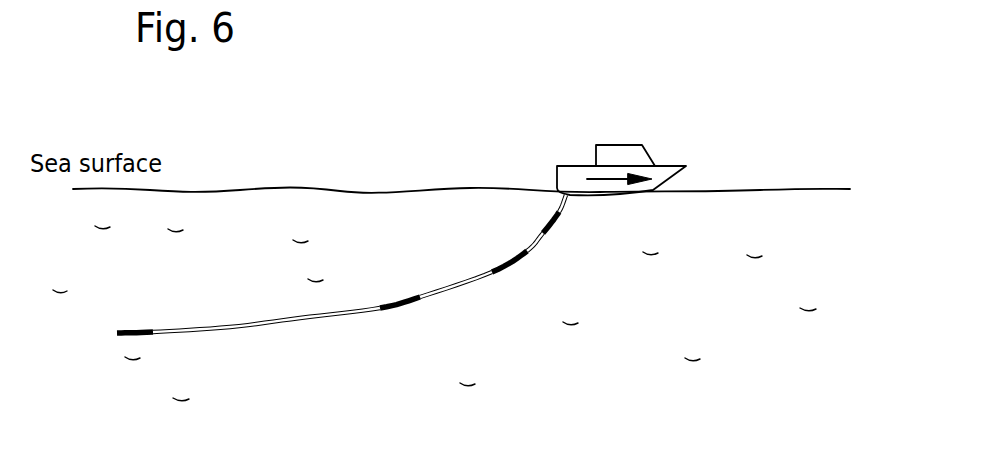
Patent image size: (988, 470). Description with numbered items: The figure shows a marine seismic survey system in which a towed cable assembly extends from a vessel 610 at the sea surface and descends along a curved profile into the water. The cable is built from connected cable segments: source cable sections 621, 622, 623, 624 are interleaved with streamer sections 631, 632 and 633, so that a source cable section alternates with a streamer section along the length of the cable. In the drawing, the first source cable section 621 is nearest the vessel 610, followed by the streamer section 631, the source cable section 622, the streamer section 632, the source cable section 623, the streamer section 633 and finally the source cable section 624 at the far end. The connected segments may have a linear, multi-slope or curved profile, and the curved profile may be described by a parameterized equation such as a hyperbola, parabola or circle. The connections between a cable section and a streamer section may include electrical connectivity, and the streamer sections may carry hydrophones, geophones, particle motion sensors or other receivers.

The vessel 610 is at (667, 165).
The source cable section 621 is at (551, 228).
The source cable section 622 is at (502, 267).
The source cable section 623 is at (398, 306).
The source cable section 624 is at (135, 331).
The streamer section 631 is at (525, 250).
The streamer section 632 is at (443, 287).
The streamer section 633 is at (228, 330).